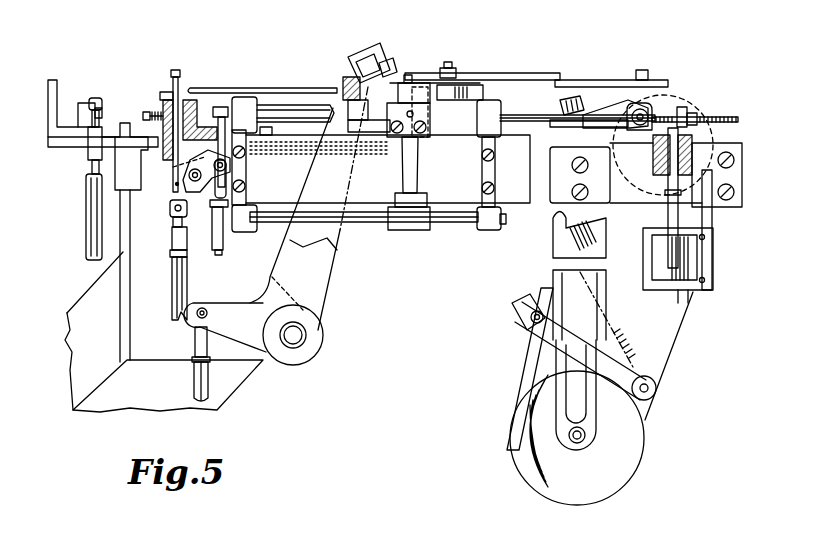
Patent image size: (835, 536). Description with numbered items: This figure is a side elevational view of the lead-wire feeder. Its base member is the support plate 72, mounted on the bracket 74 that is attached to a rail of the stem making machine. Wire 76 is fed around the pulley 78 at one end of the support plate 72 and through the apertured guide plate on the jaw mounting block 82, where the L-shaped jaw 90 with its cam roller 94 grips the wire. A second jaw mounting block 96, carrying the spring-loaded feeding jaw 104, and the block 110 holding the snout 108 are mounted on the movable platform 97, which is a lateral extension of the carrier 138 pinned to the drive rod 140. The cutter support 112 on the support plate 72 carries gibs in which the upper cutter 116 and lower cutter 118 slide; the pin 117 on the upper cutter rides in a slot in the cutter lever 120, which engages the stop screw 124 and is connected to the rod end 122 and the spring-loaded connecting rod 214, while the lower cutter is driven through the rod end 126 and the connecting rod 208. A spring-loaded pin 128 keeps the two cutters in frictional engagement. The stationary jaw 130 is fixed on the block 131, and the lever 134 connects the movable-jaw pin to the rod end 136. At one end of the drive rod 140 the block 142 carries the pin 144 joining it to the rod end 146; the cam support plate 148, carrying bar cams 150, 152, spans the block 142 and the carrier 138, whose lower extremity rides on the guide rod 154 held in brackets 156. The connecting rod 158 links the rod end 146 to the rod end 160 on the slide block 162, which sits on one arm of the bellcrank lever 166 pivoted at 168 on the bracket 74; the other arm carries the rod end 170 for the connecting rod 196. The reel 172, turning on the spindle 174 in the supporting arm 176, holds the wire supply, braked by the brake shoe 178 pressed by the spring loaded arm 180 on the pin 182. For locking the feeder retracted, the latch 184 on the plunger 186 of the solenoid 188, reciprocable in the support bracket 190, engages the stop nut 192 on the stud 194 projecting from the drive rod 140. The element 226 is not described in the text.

The support plate 72 is at (365, 220).
The bracket 74 is at (80, 355).
The wire 76 is at (613, 108).
The pulley 78 is at (694, 112).
The jaw mounting block 82 is at (476, 132).
The jaw 90 is at (470, 85).
The cam roller 94 is at (462, 61).
The jaw mounting block 96 is at (424, 132).
The movable platform 97 is at (372, 130).
The jaw 104 is at (412, 83).
The snout 108 is at (302, 87).
The block 110 is at (348, 77).
The cutter support 112 is at (192, 100).
The upper cutter 116 is at (177, 72).
The pin 117 is at (176, 184).
The lower cutter 118 is at (168, 96).
The cutter lever 120 is at (186, 195).
The rod end 122 is at (226, 196).
The stop screw 124 is at (222, 108).
The rod end 126 is at (175, 240).
The spring-loaded pin 128 is at (152, 110).
The stationary jaw 130 is at (55, 102).
The block 131 is at (70, 128).
The lever 134 is at (90, 103).
The rod end 136 is at (90, 145).
The carrier 138 is at (411, 170).
The drive rod 140 is at (275, 108).
The block 142 is at (656, 100).
The pin 144 is at (647, 114).
The rod end 146 is at (622, 90).
The cam support plate 148 is at (590, 80).
The bar cam 150 is at (486, 73).
The bar cam 152 is at (553, 118).
The guide rod 154 is at (445, 223).
The brackets 156 is at (247, 172).
The connecting rod 158 is at (573, 96).
The rod end 160 is at (388, 66).
The slide block 162 is at (366, 60).
The bellcrank lever 166 is at (322, 303).
The pivot 168 is at (300, 346).
The rod end 170 is at (198, 343).
The reel 172 is at (641, 460).
The spindle 174 is at (579, 444).
The supporting arm 176 is at (552, 238).
The brake shoe 178 is at (515, 405).
The spring loaded arm 180 is at (578, 338).
The pin 182 is at (532, 322).
The latch 184 is at (688, 148).
The plunger 186 is at (668, 206).
The solenoid 188 is at (700, 262).
The support bracket 190 is at (716, 206).
The stop nut 192 is at (684, 107).
The stud 194 is at (727, 116).
The connecting rod 196 is at (206, 378).
The connecting rod 208 is at (177, 300).
The spring-loaded connecting rod 214 is at (218, 255).
The fork 226 is at (88, 230).